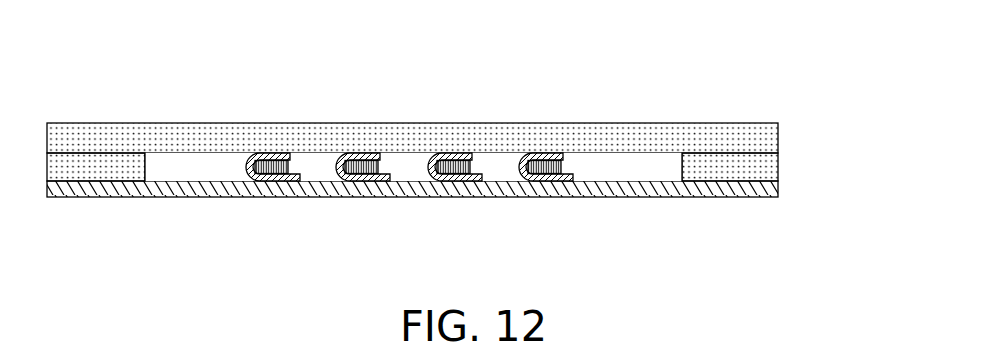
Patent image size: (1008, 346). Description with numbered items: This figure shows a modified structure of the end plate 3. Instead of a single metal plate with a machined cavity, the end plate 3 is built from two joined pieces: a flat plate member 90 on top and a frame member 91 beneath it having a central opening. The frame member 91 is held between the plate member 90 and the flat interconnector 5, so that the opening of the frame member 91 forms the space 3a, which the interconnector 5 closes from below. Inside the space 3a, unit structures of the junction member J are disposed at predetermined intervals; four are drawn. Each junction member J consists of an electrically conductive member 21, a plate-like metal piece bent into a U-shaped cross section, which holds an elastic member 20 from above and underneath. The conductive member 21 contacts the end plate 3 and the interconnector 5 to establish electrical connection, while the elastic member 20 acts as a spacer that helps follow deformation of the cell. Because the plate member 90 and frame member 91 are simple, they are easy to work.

The end plate 3 is at (462, 119).
The space 3a is at (628, 168).
The interconnector 5 is at (779, 186).
The elastic member 20 is at (534, 156).
The electrically conductive member 21 is at (551, 165).
The plate member 90 is at (779, 133).
The frame member 91 is at (779, 161).
The junction member J is at (412, 97).